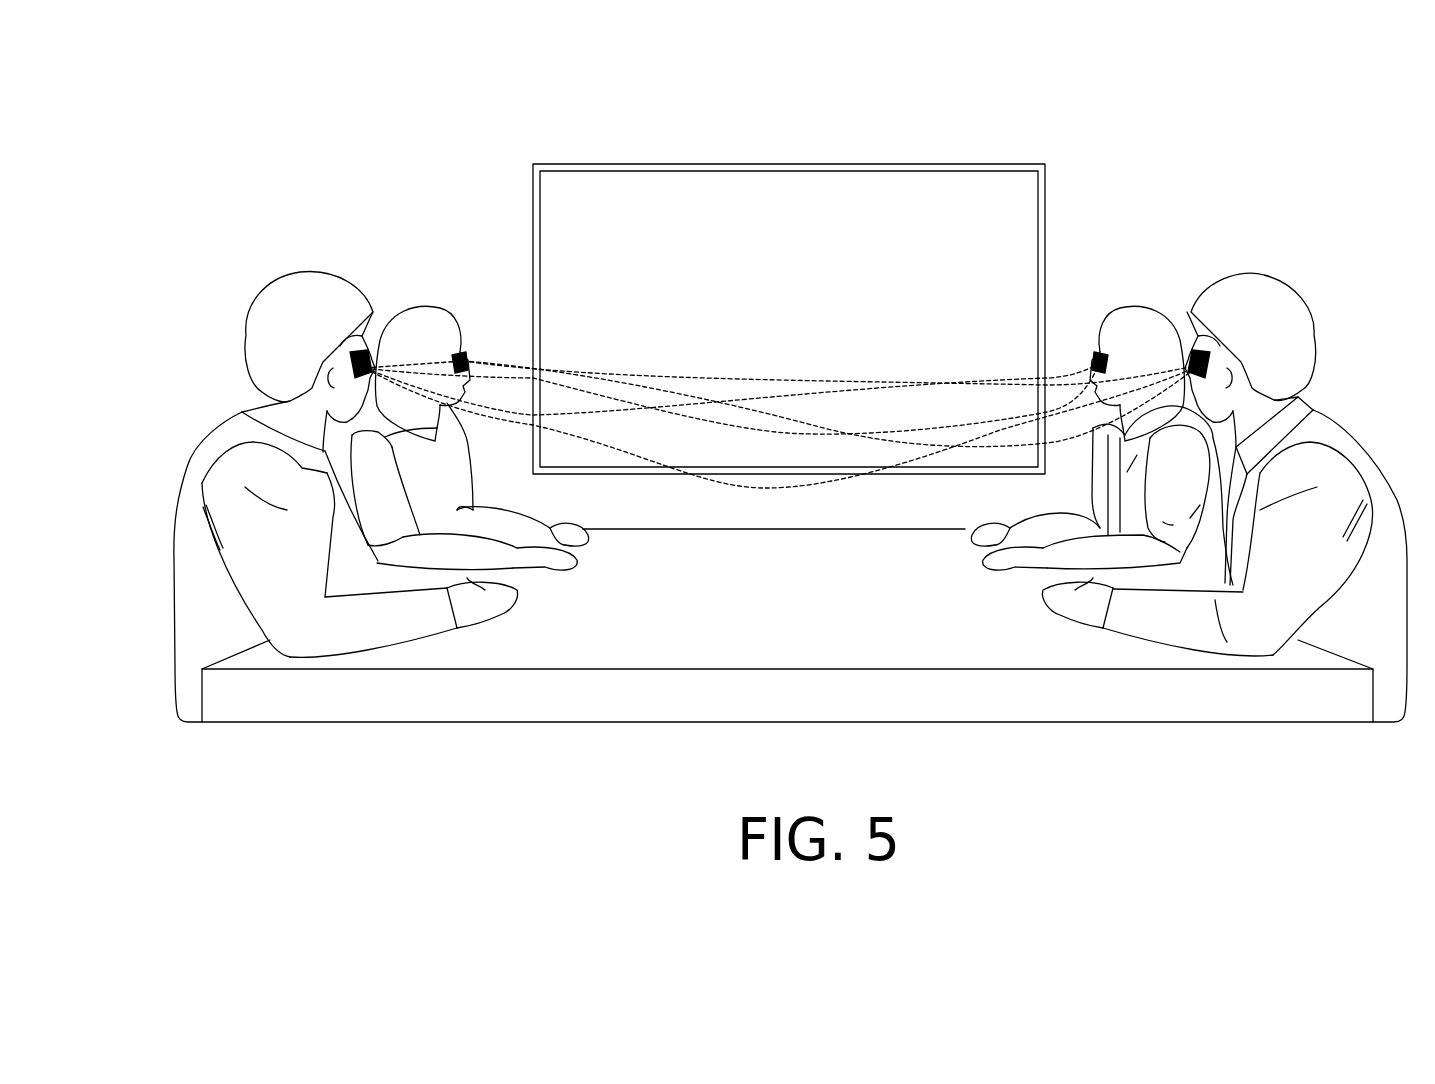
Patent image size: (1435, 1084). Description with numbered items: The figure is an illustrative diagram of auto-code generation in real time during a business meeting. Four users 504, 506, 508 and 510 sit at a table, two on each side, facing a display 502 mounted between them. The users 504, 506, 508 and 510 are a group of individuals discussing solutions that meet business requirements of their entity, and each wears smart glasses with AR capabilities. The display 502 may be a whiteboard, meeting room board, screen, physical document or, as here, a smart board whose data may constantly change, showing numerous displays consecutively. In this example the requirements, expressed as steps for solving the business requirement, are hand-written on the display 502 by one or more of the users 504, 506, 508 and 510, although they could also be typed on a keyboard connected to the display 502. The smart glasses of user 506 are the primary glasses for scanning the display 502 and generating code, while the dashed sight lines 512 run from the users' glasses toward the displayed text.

The display 502 is at (800, 164).
The user 504 is at (405, 303).
The user 506 is at (187, 470).
The user 508 is at (1348, 426).
The user 510 is at (1142, 307).
The gaze lines 512 is at (777, 499).